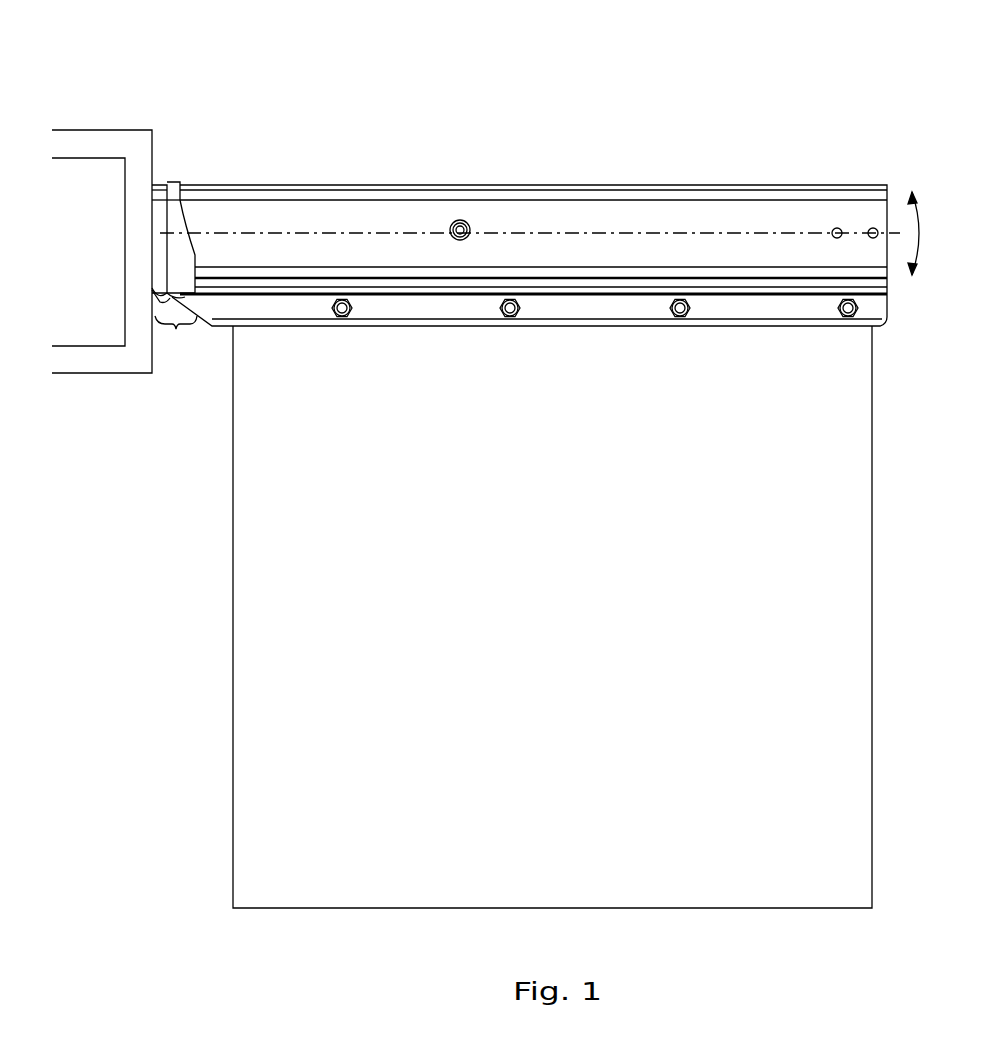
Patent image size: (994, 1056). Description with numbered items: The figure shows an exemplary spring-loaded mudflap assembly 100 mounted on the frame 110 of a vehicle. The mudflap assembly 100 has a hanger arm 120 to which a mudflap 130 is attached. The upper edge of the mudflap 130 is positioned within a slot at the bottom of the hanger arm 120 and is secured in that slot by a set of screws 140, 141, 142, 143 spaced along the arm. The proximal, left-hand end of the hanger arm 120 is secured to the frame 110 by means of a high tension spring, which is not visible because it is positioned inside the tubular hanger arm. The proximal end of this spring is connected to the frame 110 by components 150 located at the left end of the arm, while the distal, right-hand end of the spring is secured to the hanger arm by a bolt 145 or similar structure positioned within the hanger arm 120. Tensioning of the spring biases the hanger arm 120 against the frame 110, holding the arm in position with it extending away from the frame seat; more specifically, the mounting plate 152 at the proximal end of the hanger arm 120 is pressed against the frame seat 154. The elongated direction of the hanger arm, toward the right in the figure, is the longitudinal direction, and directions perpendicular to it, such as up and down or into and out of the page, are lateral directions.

The mudflap assembly 100 is at (651, 136).
The frame 110 is at (119, 130).
The hanger arm 120 is at (403, 182).
The mudflap 130 is at (642, 486).
The screw 140 is at (349, 317).
The screw 141 is at (517, 317).
The screw 142 is at (687, 317).
The screw 143 is at (841, 317).
The bolt 145 is at (461, 220).
The components 150 is at (176, 329).
The mounting plate 152 is at (175, 183).
The frame seat 154 is at (160, 183).